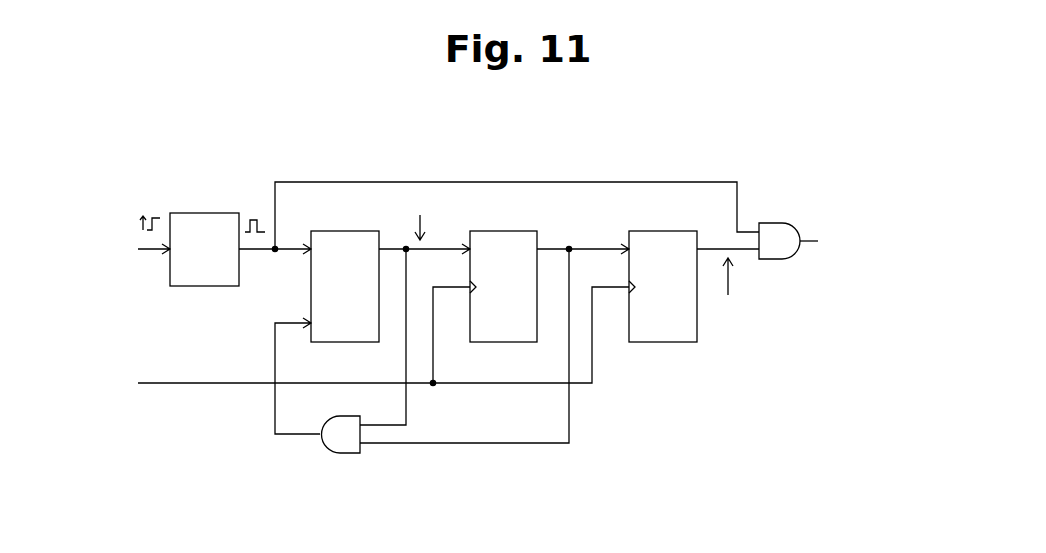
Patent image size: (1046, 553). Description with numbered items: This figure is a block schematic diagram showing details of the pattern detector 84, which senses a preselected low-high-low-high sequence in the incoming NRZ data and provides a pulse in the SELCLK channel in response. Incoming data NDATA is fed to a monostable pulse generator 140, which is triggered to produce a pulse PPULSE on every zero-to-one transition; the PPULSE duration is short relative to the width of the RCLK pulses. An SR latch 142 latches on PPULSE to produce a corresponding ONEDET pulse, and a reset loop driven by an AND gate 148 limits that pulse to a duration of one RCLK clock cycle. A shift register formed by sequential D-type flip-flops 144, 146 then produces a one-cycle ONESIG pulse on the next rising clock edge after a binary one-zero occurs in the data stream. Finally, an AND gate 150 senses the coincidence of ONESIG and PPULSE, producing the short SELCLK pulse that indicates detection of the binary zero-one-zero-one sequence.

The pattern detector 84 is at (730, 375).
The monostable pulse generator 140 is at (203, 213).
The SR latch 142 is at (303, 271).
The D-type flip-flop 144 is at (532, 231).
The D-type flip-flop 146 is at (668, 342).
The AND gate 148 is at (337, 450).
The AND gate 150 is at (780, 259).